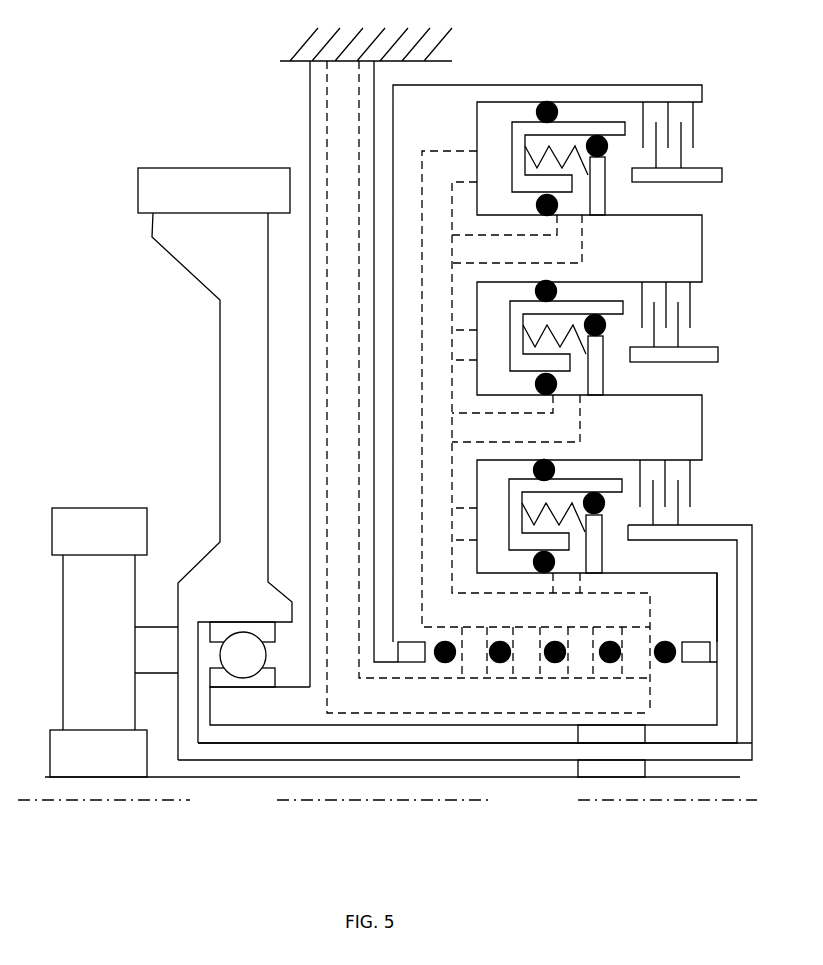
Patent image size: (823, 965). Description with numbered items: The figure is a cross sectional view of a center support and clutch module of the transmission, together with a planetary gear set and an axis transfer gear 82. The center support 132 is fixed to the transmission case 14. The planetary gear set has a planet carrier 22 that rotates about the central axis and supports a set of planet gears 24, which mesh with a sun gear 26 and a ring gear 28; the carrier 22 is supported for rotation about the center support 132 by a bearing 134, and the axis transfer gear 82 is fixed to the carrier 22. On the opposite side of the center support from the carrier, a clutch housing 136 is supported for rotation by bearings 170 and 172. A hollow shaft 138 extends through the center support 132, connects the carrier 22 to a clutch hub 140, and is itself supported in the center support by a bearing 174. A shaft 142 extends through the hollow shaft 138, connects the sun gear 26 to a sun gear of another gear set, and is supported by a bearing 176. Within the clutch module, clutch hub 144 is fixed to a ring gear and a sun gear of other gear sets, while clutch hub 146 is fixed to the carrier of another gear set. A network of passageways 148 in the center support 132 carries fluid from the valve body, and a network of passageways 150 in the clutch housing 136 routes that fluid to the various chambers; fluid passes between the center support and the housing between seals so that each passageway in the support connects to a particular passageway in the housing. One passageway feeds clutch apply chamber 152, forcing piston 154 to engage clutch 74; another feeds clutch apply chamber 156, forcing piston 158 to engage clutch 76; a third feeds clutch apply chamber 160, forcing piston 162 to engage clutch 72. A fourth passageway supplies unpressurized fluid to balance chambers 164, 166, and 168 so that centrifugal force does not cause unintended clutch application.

The transmission case 14 is at (432, 50).
The planet carrier 22 is at (239, 603).
The planet gears 24 is at (111, 663).
The sun gear 26 is at (111, 768).
The ring gear 28 is at (111, 543).
The clutch 72 is at (692, 130).
The clutch 74 is at (690, 473).
The clutch 76 is at (692, 317).
The axis transfer gear 82 is at (225, 206).
The center support 132 is at (308, 118).
The bearing 134 is at (245, 650).
The clutch housing 136 is at (455, 124).
The hollow shaft 138 is at (310, 742).
The clutch hub 140 is at (735, 560).
The shaft 142 is at (251, 808).
The clutch hub 144 is at (703, 362).
The clutch hub 146 is at (707, 182).
The network of passageways 148 is at (394, 708).
The network of passageways 150 is at (497, 623).
The clutch apply chamber 152 is at (485, 500).
The piston 154 is at (508, 495).
The clutch apply chamber 156 is at (492, 315).
The piston 158 is at (508, 318).
The clutch apply chamber 160 is at (487, 128).
The piston 162 is at (513, 137).
The balance chamber 164 is at (542, 530).
The balance chamber 166 is at (545, 343).
The balance chamber 168 is at (542, 172).
The bearing 170 is at (413, 650).
The bearing 172 is at (695, 650).
The bearing 174 is at (628, 735).
The bearing 176 is at (605, 767).